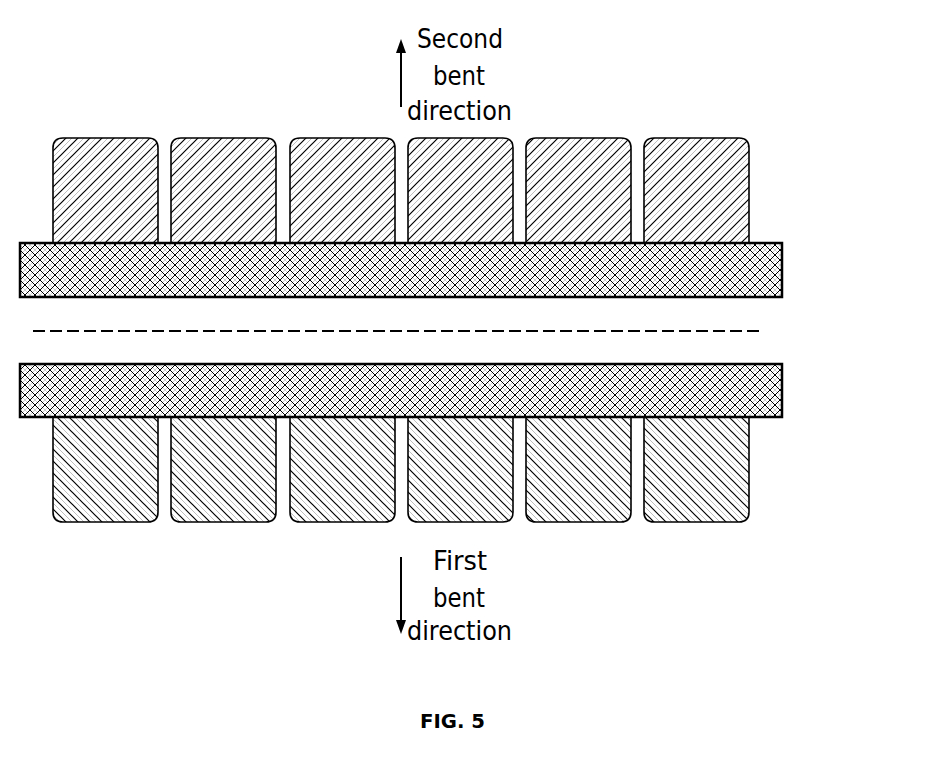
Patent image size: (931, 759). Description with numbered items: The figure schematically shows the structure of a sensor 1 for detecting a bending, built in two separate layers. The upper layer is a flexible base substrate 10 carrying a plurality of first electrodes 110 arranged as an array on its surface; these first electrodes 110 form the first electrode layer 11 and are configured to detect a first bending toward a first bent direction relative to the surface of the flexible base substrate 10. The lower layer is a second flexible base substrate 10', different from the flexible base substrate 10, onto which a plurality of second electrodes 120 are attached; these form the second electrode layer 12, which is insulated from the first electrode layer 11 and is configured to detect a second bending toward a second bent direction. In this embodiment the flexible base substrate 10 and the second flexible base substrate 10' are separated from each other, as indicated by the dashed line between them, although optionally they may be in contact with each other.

The sensor 1 is at (653, 106).
The flexible base substrate 10 is at (444, 270).
The second flexible base substrate 10' is at (446, 390).
The first electrode layer 11 is at (460, 190).
The first electrodes 110 is at (401, 190).
The second electrode layer 12 is at (460, 469).
The second electrodes 120 is at (401, 469).